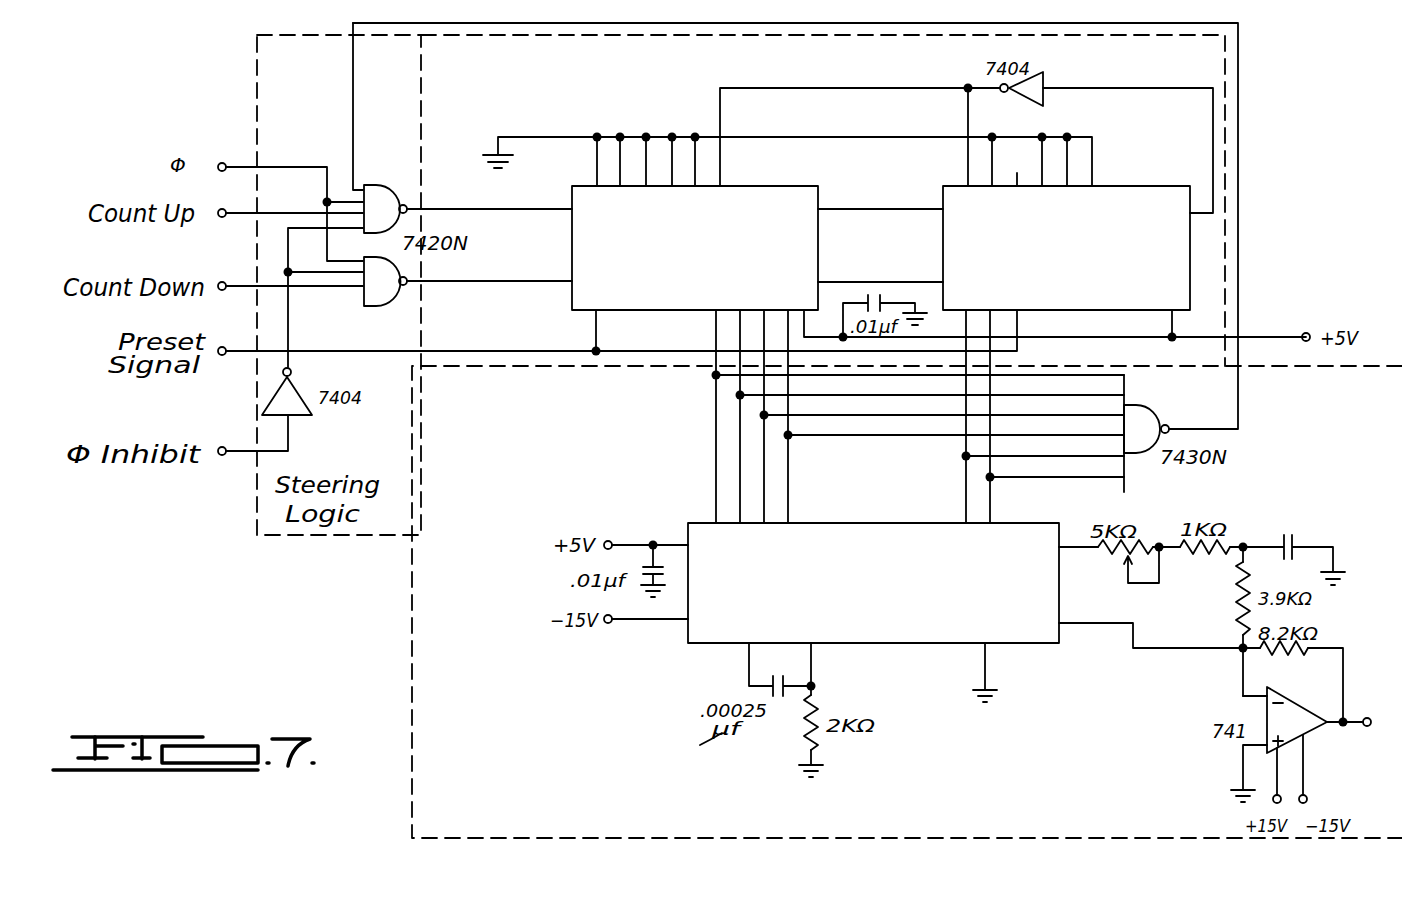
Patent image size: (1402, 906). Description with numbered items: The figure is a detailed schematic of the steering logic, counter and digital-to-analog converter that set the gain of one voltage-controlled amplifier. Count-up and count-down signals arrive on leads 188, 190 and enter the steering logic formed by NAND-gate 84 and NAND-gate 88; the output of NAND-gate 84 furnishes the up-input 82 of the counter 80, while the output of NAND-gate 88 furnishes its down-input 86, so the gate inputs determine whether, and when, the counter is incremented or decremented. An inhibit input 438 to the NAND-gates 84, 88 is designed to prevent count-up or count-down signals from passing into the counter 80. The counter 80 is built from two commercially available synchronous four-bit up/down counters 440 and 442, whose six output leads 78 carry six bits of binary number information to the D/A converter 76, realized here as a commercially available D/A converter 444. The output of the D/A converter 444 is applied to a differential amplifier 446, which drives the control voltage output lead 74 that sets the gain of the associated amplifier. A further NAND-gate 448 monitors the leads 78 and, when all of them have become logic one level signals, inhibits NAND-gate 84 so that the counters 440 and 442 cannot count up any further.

The control voltage input lead 74 is at (1352, 716).
The D/A converter 76 is at (907, 602).
The input 78 is at (960, 489).
The binary counter 80 is at (823, 200).
The up-input 82 is at (470, 190).
The NAND-gate 84 is at (383, 186).
The down-input 86 is at (470, 284).
The NAND-gate 88 is at (381, 305).
The lead 188 is at (235, 210).
The lead 190 is at (236, 283).
The inhibit input 438 is at (238, 454).
The synchronous four-bit up/down counter 440 is at (778, 188).
The synchronous four-bit up/down counter 442 is at (1140, 196).
The D/A converter 444 is at (907, 632).
The differential amplifier 446 is at (1308, 722).
The NAND-gate 448 is at (1148, 421).